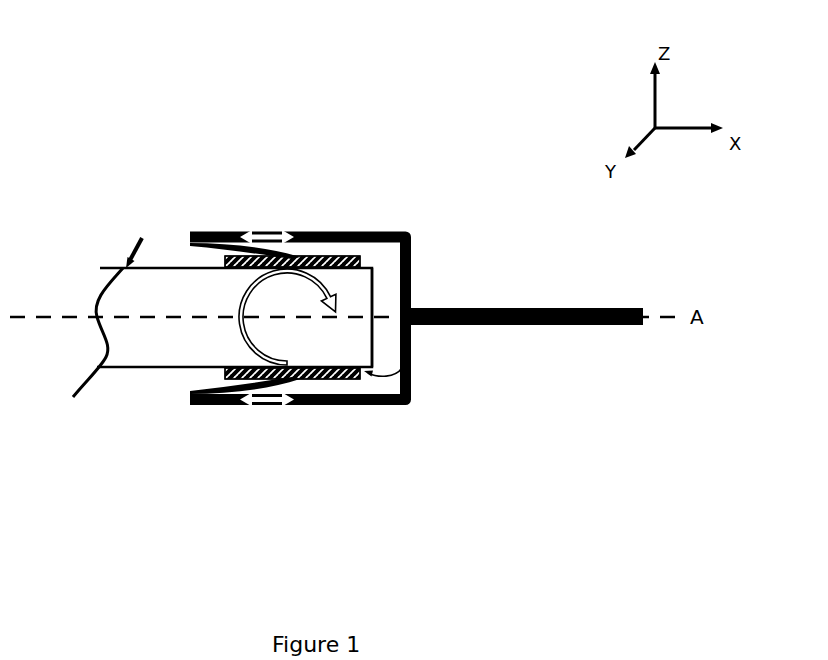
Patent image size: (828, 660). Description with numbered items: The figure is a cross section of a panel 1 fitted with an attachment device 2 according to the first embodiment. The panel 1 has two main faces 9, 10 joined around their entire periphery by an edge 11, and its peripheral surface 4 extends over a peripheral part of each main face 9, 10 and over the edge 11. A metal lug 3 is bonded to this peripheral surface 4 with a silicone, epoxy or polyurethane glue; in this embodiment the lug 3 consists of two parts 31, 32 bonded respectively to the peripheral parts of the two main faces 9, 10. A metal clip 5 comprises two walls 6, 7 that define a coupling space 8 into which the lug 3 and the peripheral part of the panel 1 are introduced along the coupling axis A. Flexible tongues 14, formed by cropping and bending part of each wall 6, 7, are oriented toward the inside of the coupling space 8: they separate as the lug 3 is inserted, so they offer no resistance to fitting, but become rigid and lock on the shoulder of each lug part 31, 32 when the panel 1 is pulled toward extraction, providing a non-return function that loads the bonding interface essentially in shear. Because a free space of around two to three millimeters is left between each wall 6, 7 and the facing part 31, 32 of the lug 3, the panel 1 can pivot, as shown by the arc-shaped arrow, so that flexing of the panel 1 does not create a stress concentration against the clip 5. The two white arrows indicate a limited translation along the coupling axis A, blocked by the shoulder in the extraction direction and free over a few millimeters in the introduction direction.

The panel 1 is at (154, 277).
The attachment device 2 is at (452, 347).
The lug 3 is at (314, 293).
The first part of the lug 31 is at (365, 250).
The second part of the lug 32 is at (299, 381).
The peripheral surface 4 is at (412, 345).
The clip 5 is at (398, 405).
The first wall of the clip 6 is at (192, 397).
The second wall of the clip 7 is at (192, 245).
The coupling space 8 is at (356, 386).
The first main face 9 is at (140, 240).
The second main face 10 is at (113, 378).
The edge 11 is at (376, 284).
The flexible tongues 14 is at (300, 231).